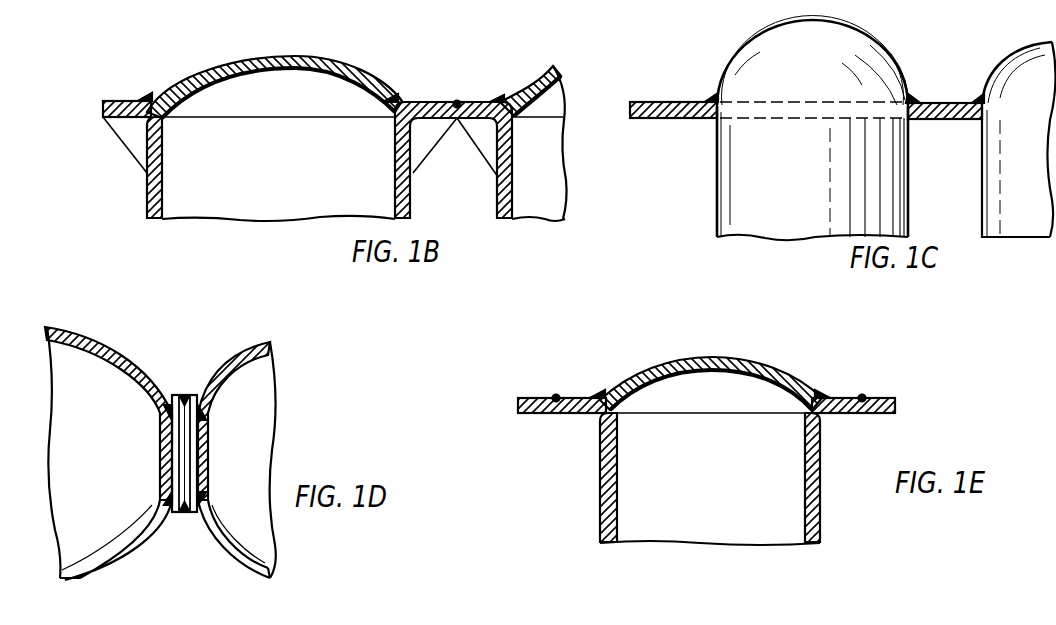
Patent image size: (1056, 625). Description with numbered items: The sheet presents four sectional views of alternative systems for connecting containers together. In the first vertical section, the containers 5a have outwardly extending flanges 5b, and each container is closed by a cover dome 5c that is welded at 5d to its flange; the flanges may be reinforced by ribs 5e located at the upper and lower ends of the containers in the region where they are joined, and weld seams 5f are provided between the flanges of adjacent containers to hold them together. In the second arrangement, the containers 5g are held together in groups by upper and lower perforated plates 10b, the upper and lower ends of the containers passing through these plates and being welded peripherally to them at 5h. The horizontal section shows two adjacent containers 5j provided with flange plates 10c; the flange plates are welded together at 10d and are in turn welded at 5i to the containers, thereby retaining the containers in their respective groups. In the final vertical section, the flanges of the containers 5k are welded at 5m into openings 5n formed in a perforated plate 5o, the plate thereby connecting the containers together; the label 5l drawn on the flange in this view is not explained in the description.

In FIG. 1B, the container 5a is at (146, 207).
In FIG. 1B, the outwardly extending flange 5b is at (107, 101).
In FIG. 1B, the cover dome 5c is at (276, 58).
In FIG. 1B, the weld 5d is at (409, 100).
In FIG. 1B, the rib 5e is at (473, 150).
In FIG. 1B, the weld seam 5f is at (457, 101).
In FIG. 1C, the container 5g is at (716, 172).
In FIG. 1C, the peripheral weld 5h is at (911, 100).
In FIG. 1C, the perforated plate 10b is at (660, 102).
In FIG. 1D, the weld 5i is at (214, 420).
In FIG. 1D, the container 5j is at (68, 328).
In FIG. 1D, the flange plate 10c is at (172, 400).
In FIG. 1D, the weld 10d is at (186, 395).
In FIG. 1E, the container 5k is at (822, 490).
In FIG. 1E, the flange right portion 5l is at (826, 398).
In FIG. 1E, the weld 5m is at (556, 397).
In FIG. 1E, the opening 5n is at (568, 414).
In FIG. 1E, the perforated plate 5o is at (882, 414).